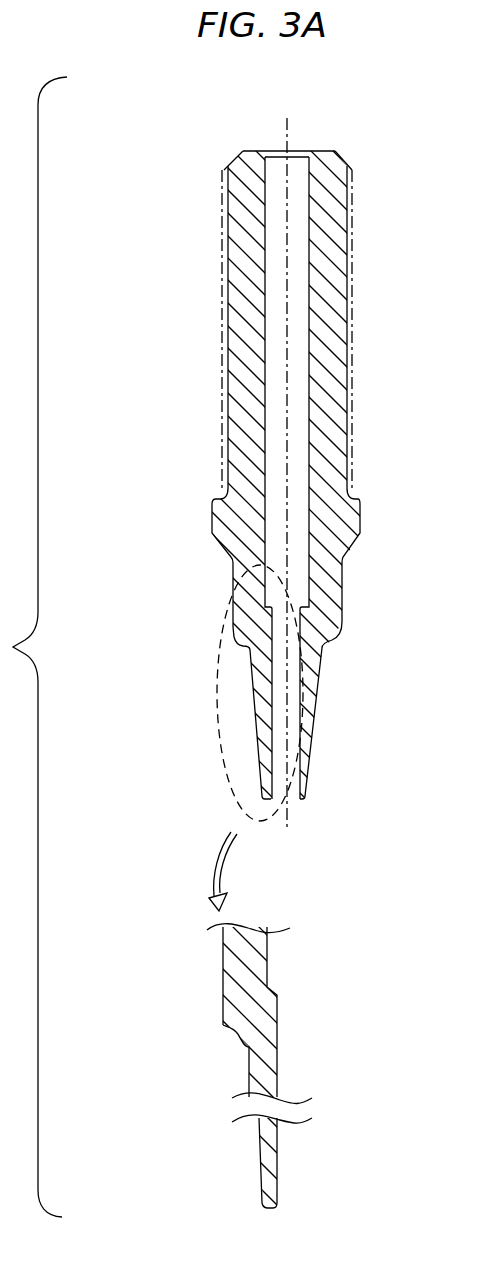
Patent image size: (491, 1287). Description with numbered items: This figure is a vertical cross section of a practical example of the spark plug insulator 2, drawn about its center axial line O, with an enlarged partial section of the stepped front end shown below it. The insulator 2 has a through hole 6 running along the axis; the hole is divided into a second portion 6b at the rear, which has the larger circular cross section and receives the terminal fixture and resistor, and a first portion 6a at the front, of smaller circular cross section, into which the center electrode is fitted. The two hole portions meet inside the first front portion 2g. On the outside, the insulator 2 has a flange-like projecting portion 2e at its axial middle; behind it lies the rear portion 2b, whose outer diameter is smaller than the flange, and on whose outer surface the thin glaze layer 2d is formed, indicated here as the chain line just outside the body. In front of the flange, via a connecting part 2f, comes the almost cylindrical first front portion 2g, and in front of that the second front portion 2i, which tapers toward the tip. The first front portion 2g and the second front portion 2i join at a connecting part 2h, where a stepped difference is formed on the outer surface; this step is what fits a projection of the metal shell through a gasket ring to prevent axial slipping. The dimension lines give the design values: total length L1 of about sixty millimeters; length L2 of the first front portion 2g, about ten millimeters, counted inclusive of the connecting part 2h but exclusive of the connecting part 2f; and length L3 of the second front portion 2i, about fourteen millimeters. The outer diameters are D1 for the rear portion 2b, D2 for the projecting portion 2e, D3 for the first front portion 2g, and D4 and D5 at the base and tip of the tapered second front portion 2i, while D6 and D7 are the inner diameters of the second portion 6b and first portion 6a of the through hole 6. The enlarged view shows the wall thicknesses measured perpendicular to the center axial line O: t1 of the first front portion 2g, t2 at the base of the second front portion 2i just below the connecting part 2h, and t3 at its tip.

The insulator 2 is at (362, 150).
The rear portion 2b is at (336, 382).
The glaze layer 2d is at (355, 258).
The projecting portion 2e is at (350, 535).
The connecting part 2f is at (372, 563).
The first front portion 2g is at (345, 624).
The connecting part 2h is at (234, 639).
The second front portion 2i is at (323, 690).
The through hole 6 is at (311, 222).
The second portion 6b is at (306, 441).
The first portion 6a is at (302, 751).
The center axial line O is at (286, 121).
The total length L1 is at (313, 799).
The length of the first front portion L2 is at (250, 645).
The length of the second front portion L3 is at (167, 645).
The outer diameter of the main portion D1 is at (163, 347).
The outer diameter of the projecting portion D2 is at (172, 519).
The outer diameter of the first front portion D3 is at (190, 595).
The outer base diameter of the second front portion D4 is at (210, 655).
The outer tip diameter of the second front portion D5 is at (215, 796).
The inner diameter of the second portion D6 is at (309, 389).
The inner diameter of the first portion D7 is at (300, 717).
The thickness of the first front portion t1 is at (180, 963).
The thickness at the base of the second front portion t2 is at (200, 1042).
The thickness at the tip of the second front portion t3 is at (222, 1201).